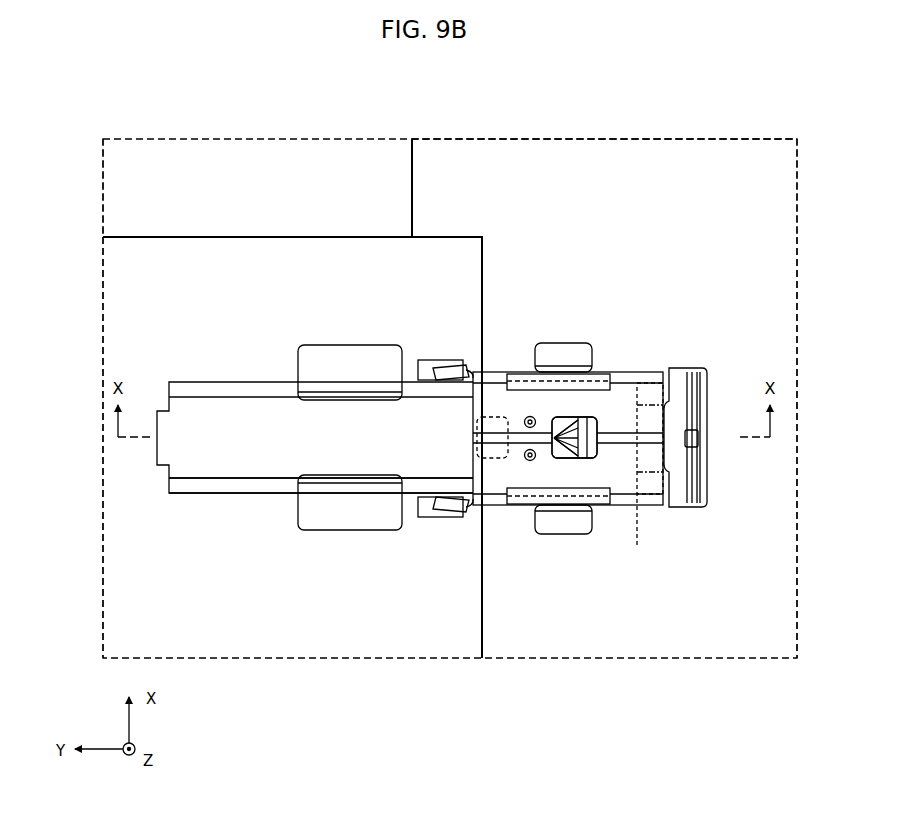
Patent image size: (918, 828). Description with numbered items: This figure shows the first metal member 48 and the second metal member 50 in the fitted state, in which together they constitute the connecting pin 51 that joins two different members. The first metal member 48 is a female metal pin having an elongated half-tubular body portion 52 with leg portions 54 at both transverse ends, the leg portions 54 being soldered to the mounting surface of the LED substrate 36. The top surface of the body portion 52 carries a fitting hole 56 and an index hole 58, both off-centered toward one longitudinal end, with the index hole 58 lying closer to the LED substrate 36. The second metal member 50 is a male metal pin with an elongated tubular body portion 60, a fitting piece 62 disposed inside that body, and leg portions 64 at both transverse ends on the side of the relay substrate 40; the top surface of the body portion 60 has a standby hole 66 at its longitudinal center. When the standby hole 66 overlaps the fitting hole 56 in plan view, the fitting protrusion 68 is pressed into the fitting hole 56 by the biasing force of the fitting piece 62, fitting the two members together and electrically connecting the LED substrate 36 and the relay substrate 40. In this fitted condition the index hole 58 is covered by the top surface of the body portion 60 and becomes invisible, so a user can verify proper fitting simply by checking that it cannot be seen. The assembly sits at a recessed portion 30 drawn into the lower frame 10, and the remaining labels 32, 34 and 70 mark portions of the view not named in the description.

The lower frame 10 is at (244, 153).
The recessed portion 30 is at (127, 221).
The partition wall 32 is at (138, 316).
The second region 34 is at (768, 210).
The LED substrate 36 is at (125, 351).
The relay substrate 40 is at (785, 265).
The first metal member 48 is at (258, 378).
The second metal member 50 is at (694, 356).
The connecting pin 51 is at (500, 330).
The body portion 52 is at (265, 473).
The leg portion 54 is at (436, 362).
The fitting hole 56 is at (574, 437).
The index hole 58 is at (495, 462).
The body portion 60 is at (647, 483).
The fitting piece 62 is at (637, 545).
The leg portion 64 is at (553, 346).
The standby hole 66 is at (577, 416).
The fitting protrusion 68 is at (587, 462).
The button 70 is at (707, 487).